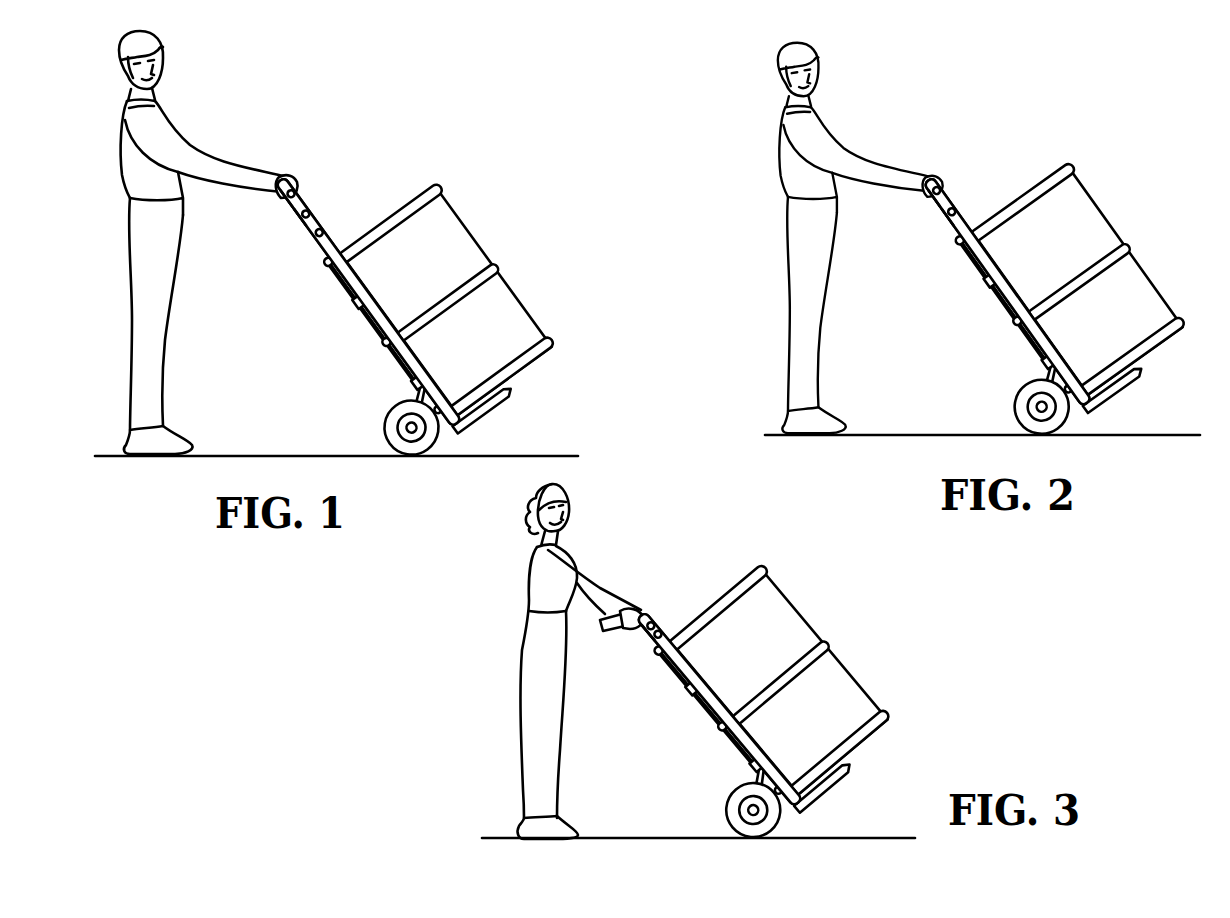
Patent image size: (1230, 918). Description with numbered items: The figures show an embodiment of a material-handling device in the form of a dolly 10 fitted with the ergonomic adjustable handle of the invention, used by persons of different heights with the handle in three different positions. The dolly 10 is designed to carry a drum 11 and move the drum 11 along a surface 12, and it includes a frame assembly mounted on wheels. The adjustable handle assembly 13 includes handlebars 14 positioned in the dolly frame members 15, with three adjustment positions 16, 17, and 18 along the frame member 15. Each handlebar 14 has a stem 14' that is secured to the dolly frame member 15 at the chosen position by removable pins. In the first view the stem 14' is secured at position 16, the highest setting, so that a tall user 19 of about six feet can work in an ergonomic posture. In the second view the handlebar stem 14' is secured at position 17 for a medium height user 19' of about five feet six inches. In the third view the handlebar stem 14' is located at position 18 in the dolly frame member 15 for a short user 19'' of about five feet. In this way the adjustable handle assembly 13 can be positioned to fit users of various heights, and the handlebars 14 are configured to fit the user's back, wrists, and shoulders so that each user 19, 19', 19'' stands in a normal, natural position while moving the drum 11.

In FIG. 1, the dolly 10 is at (352, 366).
In FIG. 2, the dolly 10 is at (1010, 365).
In FIG. 3, the dolly 10 is at (715, 763).
In FIG. 1, the drum 11 is at (472, 238).
In FIG. 2, the drum 11 is at (1110, 225).
In FIG. 3, the drum 11 is at (817, 628).
In FIG. 1, the surface 12 is at (521, 456).
In FIG. 2, the surface 12 is at (1147, 435).
In FIG. 3, the surface 12 is at (847, 838).
In FIG. 1, the adjustable handle assembly 13 is at (349, 208).
In FIG. 2, the adjustable handle assembly 13 is at (991, 199).
In FIG. 3, the adjustable handle assembly 13 is at (690, 605).
In FIG. 1, the handlebars 14 is at (301, 159).
In FIG. 2, the handlebars 14 is at (938, 159).
In FIG. 3, the handlebars 14 is at (634, 597).
In FIG. 1, the stem 14' is at (326, 180).
In FIG. 2, the stem 14' is at (972, 178).
In FIG. 3, the stem 14' is at (672, 601).
In FIG. 1, the dolly frame member 15 is at (356, 278).
In FIG. 2, the dolly frame member 15 is at (983, 257).
In FIG. 3, the dolly frame member 15 is at (688, 673).
In FIG. 1, the adjustment position 16 is at (316, 238).
In FIG. 1, the adjustment position 17 is at (300, 214).
In FIG. 2, the adjustment position 17 is at (948, 223).
In FIG. 1, the adjustment position 18 is at (284, 198).
In FIG. 2, the adjustment position 18 is at (930, 200).
In FIG. 3, the adjustment position 18 is at (653, 635).
In FIG. 1, the tall user 19 is at (208, 242).
In FIG. 2, the medium height user 19' is at (860, 238).
In FIG. 3, the short user 19'' is at (580, 661).